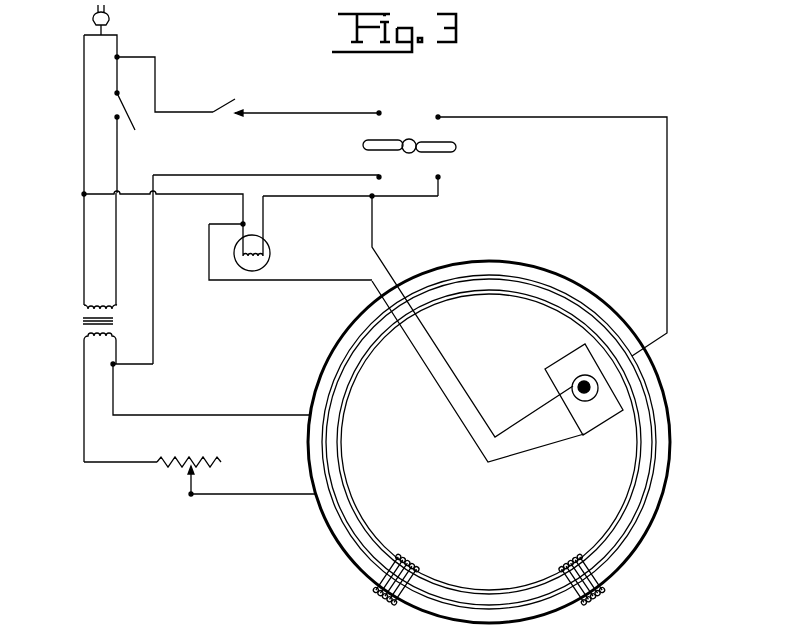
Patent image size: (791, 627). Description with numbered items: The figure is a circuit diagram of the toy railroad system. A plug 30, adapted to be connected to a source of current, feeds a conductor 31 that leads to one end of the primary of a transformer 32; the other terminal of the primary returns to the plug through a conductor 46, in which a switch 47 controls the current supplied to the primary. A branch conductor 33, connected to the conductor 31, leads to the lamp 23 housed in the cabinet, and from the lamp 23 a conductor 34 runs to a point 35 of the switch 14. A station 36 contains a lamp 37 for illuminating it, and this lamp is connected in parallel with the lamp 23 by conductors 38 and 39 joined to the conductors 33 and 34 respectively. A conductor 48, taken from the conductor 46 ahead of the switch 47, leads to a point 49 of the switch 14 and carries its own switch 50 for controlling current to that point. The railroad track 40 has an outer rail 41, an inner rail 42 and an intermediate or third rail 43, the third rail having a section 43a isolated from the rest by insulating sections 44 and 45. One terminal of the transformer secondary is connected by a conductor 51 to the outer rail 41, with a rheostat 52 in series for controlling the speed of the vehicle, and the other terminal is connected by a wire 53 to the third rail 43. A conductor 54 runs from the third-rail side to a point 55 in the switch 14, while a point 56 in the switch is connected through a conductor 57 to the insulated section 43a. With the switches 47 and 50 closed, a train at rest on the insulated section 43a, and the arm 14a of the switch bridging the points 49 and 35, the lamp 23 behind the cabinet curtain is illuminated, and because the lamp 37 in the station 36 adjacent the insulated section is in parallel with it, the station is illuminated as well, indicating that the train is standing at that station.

The switch 14 is at (413, 140).
The arm of the switch 14a is at (423, 154).
The lamp 23 is at (268, 246).
The plug 30 is at (111, 18).
The conductor 31 is at (84, 108).
The transformer 32 is at (80, 322).
The branch conductor 33 is at (166, 194).
The conductor 34 is at (312, 196).
The point of the switch 35 is at (446, 177).
The station 36 is at (588, 418).
The lamp 37 is at (571, 380).
The conductor 38 is at (426, 369).
The conductor 39 is at (437, 343).
The railroad track 40 is at (412, 571).
The outer rail 41 is at (332, 518).
The inner rail 42 is at (348, 495).
The third rail 43 is at (327, 477).
The insulated section of the third rail 43a is at (645, 380).
The insulating section 44 is at (592, 302).
The insulating section 45 is at (665, 427).
The conductor 46 is at (120, 238).
The switch 47 is at (128, 125).
The conductor 48 is at (156, 80).
The point in the switch 49 is at (379, 111).
The switch 50 is at (229, 117).
The conductor 51 is at (80, 410).
The rheostat 52 is at (181, 474).
The wire 53 is at (174, 415).
The conductor 54 is at (155, 320).
The point in the switch 55 is at (378, 176).
The point in the switch 56 is at (442, 118).
The conductor 57 is at (598, 117).